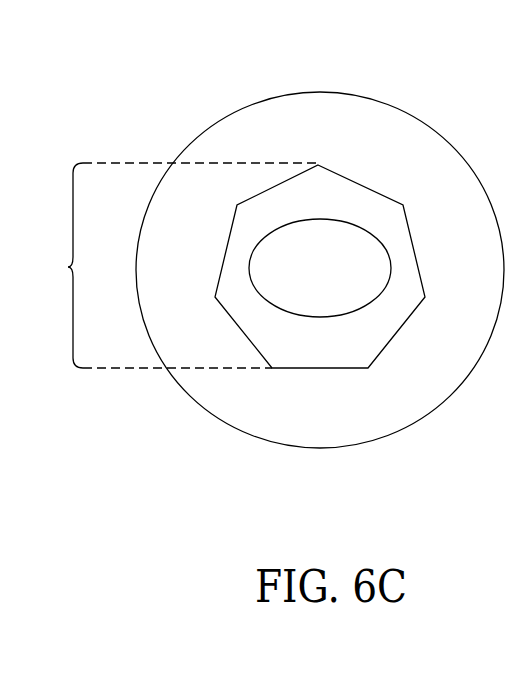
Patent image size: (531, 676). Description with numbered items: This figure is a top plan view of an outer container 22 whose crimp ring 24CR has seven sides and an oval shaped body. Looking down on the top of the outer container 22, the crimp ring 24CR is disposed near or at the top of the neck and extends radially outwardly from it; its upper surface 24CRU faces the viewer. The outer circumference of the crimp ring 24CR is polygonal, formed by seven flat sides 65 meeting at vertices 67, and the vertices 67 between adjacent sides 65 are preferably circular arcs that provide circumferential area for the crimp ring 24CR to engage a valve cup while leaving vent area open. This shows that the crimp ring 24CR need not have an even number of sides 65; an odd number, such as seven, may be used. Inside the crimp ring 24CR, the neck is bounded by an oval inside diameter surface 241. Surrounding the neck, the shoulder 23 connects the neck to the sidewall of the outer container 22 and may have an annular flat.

The outer container 22 is at (408, 495).
The shoulder 23 is at (342, 413).
The inside diameter surface 241 is at (376, 268).
The crimp ring 24CR is at (161, 265).
The upper surface 24CRU is at (358, 215).
The sides 65 is at (357, 182).
The vertices 67 is at (318, 165).